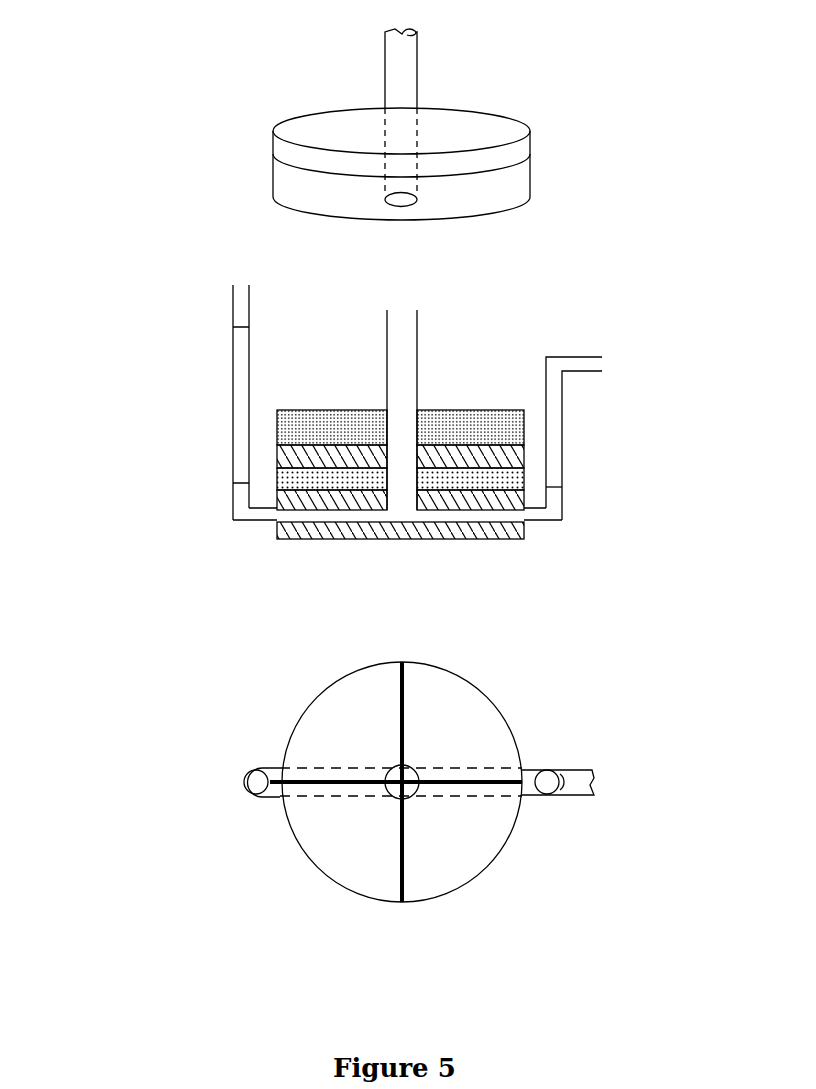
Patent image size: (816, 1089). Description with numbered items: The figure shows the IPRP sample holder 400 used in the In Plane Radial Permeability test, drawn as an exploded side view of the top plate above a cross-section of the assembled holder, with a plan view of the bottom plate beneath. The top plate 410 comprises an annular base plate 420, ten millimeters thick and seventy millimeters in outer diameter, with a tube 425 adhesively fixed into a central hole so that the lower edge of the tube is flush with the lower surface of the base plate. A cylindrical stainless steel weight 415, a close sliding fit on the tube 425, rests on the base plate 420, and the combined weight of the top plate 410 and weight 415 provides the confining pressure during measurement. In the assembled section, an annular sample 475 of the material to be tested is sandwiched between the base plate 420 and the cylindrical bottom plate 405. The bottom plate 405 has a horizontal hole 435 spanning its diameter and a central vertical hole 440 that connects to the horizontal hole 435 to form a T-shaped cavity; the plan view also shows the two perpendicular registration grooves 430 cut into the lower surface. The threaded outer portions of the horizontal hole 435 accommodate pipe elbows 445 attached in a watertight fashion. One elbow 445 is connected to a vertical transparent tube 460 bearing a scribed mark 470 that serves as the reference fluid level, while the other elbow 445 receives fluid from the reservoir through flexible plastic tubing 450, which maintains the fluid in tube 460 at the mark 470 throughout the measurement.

The IPRP sample holder 400 is at (365, 343).
The bottom plate 405 is at (474, 546).
The top plate 410 is at (200, 98).
The stainless steel weight 415 is at (536, 147).
The annular base plate 420 is at (536, 186).
The tube 425 is at (378, 78).
The registration grooves 430 is at (402, 546).
The horizontal hole 435 is at (504, 517).
The central vertical hole 440 is at (406, 509).
The pipe elbows 445 is at (228, 516).
The flexible plastic tubing 450 is at (568, 404).
The vertical transparent tube 460 is at (227, 393).
The scribed mark 470 is at (228, 325).
The annular sample 475 is at (534, 480).